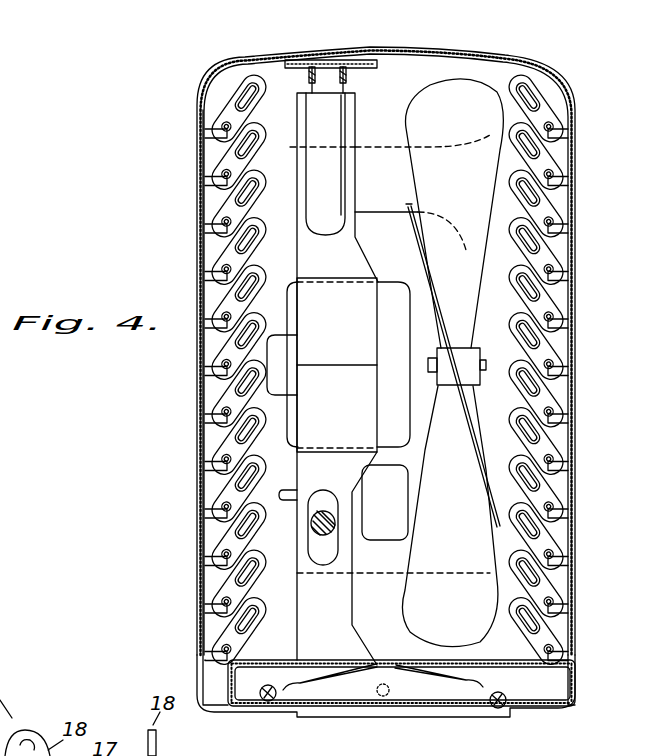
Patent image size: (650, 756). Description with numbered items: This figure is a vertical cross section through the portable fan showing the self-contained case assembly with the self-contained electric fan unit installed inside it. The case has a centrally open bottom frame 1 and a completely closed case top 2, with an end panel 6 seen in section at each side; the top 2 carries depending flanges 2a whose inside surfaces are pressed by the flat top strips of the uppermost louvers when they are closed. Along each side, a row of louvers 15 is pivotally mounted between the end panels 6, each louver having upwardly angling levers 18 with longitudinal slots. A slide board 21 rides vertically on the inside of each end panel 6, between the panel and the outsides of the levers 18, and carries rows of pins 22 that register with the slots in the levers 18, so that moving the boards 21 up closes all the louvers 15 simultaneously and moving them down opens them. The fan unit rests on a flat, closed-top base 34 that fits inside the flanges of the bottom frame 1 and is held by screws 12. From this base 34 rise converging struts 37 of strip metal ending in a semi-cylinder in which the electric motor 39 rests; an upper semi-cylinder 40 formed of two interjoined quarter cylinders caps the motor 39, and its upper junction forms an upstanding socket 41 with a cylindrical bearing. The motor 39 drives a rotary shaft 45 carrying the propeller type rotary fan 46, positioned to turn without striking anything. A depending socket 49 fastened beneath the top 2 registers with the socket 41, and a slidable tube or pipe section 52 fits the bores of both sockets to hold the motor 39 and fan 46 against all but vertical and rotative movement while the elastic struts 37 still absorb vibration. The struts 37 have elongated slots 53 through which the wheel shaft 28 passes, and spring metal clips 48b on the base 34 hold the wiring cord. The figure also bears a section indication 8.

The bottom frame 1 is at (477, 667).
The case top 2 is at (395, 53).
The depending flanges 2a is at (620, 119).
The end panels 6 is at (443, 72).
The section line 8- 8 is at (327, 3).
The screws 12 is at (498, 708).
The louvers 15 is at (567, 353).
The levers 18 is at (386, 369).
The slide boards 21 is at (263, 573).
The pins 22 is at (386, 369).
The shaft 28 is at (321, 512).
The base 34 is at (458, 670).
The converging struts 37 is at (342, 563).
The electric motor 39 is at (401, 390).
The upper semi-cylinder 40 is at (355, 316).
The upstanding socket 41 is at (327, 177).
The rotary shaft 45 is at (486, 364).
The propeller type rotary fan 46 is at (458, 252).
The spring metal clips 48b is at (317, 685).
The depending socket 49 is at (312, 77).
The tube or pipe section 52 is at (330, 81).
The elongated slots 53 is at (318, 547).